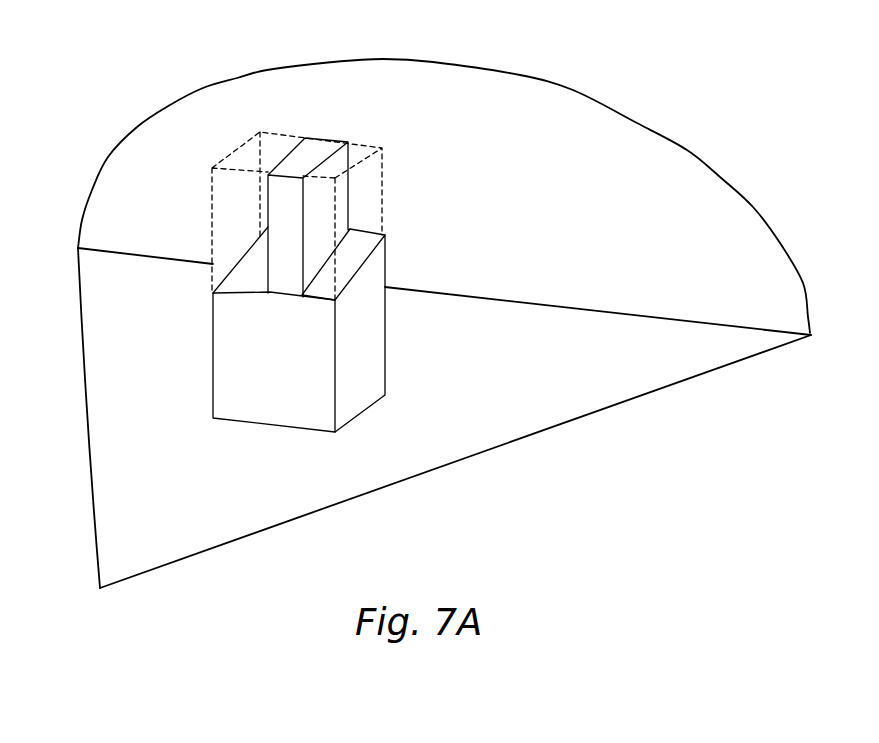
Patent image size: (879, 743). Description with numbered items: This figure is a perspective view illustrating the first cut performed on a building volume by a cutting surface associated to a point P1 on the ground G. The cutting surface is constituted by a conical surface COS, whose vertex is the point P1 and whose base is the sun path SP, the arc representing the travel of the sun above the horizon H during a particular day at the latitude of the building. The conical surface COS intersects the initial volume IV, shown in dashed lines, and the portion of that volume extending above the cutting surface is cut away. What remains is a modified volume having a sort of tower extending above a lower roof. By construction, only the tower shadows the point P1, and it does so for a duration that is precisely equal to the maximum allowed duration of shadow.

The conical surface COS is at (421, 327).
The sun path SP is at (573, 90).
The horizon H is at (563, 305).
The initial volume IV is at (225, 157).
The ground G is at (568, 511).
The point P1 is at (100, 590).